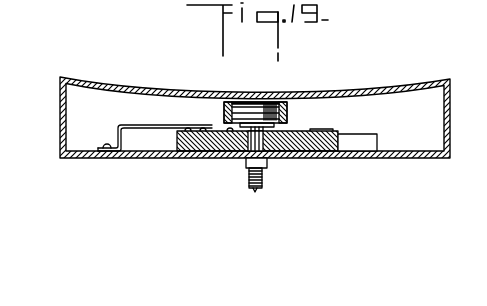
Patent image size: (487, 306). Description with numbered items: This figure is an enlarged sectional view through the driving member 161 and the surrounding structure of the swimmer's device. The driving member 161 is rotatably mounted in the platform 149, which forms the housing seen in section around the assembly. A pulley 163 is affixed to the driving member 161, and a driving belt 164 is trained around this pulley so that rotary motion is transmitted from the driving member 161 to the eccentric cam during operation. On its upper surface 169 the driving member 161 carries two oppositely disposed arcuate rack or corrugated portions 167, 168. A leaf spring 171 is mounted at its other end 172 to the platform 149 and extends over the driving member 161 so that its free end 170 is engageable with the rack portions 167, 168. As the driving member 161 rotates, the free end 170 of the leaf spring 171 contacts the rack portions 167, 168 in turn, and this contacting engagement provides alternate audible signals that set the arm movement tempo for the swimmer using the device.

The platform 149 is at (433, 160).
The driving member 161 is at (338, 134).
The pulley 163 is at (286, 122).
The driving belt 164 is at (224, 106).
The rack portion 167 is at (309, 134).
The rack portion 168 is at (188, 135).
The upper surface 169 is at (229, 135).
The free end 170 is at (203, 135).
The leaf spring 171 is at (143, 125).
The other end 172 is at (110, 159).